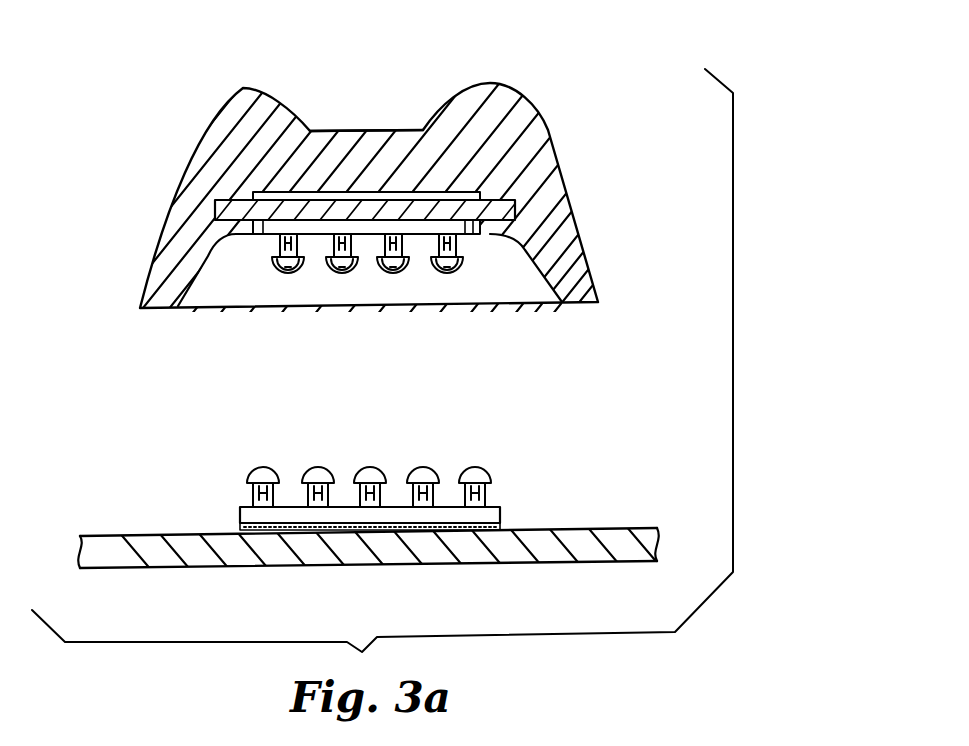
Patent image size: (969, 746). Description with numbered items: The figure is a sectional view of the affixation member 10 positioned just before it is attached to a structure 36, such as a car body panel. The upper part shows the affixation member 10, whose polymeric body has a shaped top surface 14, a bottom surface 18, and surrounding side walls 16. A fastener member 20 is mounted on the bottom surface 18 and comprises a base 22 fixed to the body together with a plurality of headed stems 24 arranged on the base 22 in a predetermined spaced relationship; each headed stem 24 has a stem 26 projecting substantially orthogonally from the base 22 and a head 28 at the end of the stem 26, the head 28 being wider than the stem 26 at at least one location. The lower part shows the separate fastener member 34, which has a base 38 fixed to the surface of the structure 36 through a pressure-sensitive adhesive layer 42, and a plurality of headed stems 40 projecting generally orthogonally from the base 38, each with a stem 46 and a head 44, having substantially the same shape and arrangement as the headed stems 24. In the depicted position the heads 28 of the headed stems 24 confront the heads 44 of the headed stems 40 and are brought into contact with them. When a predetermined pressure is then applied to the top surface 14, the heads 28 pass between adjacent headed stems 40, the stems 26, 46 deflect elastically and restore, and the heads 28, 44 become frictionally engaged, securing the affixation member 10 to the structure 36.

The affixation member 10 is at (507, 84).
The top surface 14 is at (353, 130).
The side walls 16 is at (175, 156).
The bottom surface 18 is at (492, 232).
The fastener member 20 is at (258, 247).
The base 22 is at (463, 203).
The headed stems 24 is at (387, 287).
The stem 26 is at (437, 240).
The head 28 is at (291, 274).
The separate fastener member 34 is at (390, 496).
The structure 36 is at (145, 542).
The base 38 is at (237, 517).
The headed stems 40 is at (468, 462).
The pressure-sensitive adhesive layer 42 is at (347, 532).
The heads 44 is at (357, 473).
The stems 46 is at (307, 500).